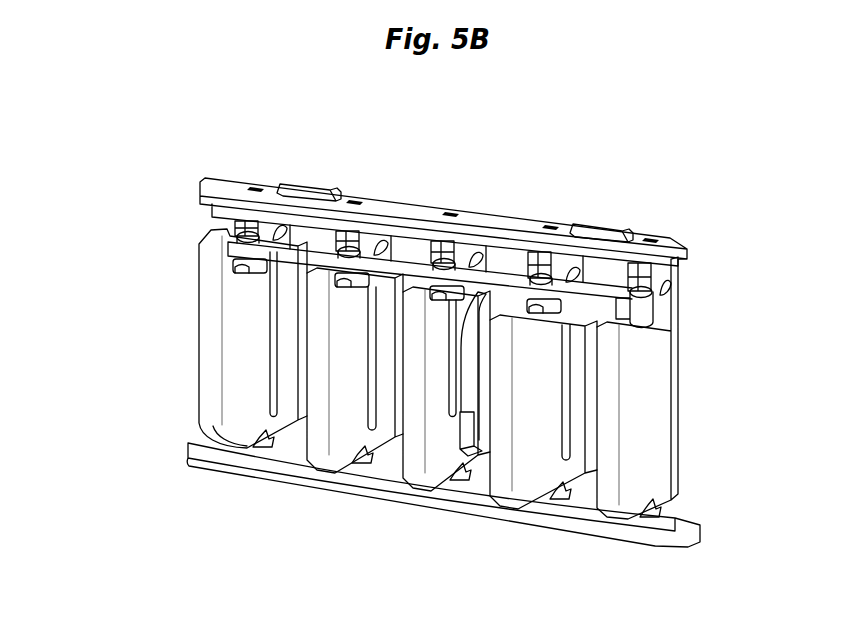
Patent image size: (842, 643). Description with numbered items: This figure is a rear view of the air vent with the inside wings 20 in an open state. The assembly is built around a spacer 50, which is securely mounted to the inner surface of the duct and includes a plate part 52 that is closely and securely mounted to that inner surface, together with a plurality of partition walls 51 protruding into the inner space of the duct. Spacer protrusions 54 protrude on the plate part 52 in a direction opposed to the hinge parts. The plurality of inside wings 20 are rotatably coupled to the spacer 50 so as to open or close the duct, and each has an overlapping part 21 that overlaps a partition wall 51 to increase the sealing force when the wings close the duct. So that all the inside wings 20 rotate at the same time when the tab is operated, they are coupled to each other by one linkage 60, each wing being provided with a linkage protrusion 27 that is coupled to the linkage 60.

The inside wings 20 is at (318, 384).
The overlapping parts 21 is at (207, 243).
The linkage protrusions 27 is at (655, 292).
The spacer 50 is at (443, 355).
The partition walls 51 is at (286, 216).
The plate part 52 is at (380, 213).
The spacer protrusions 54 is at (310, 185).
The linkage 60 is at (405, 262).